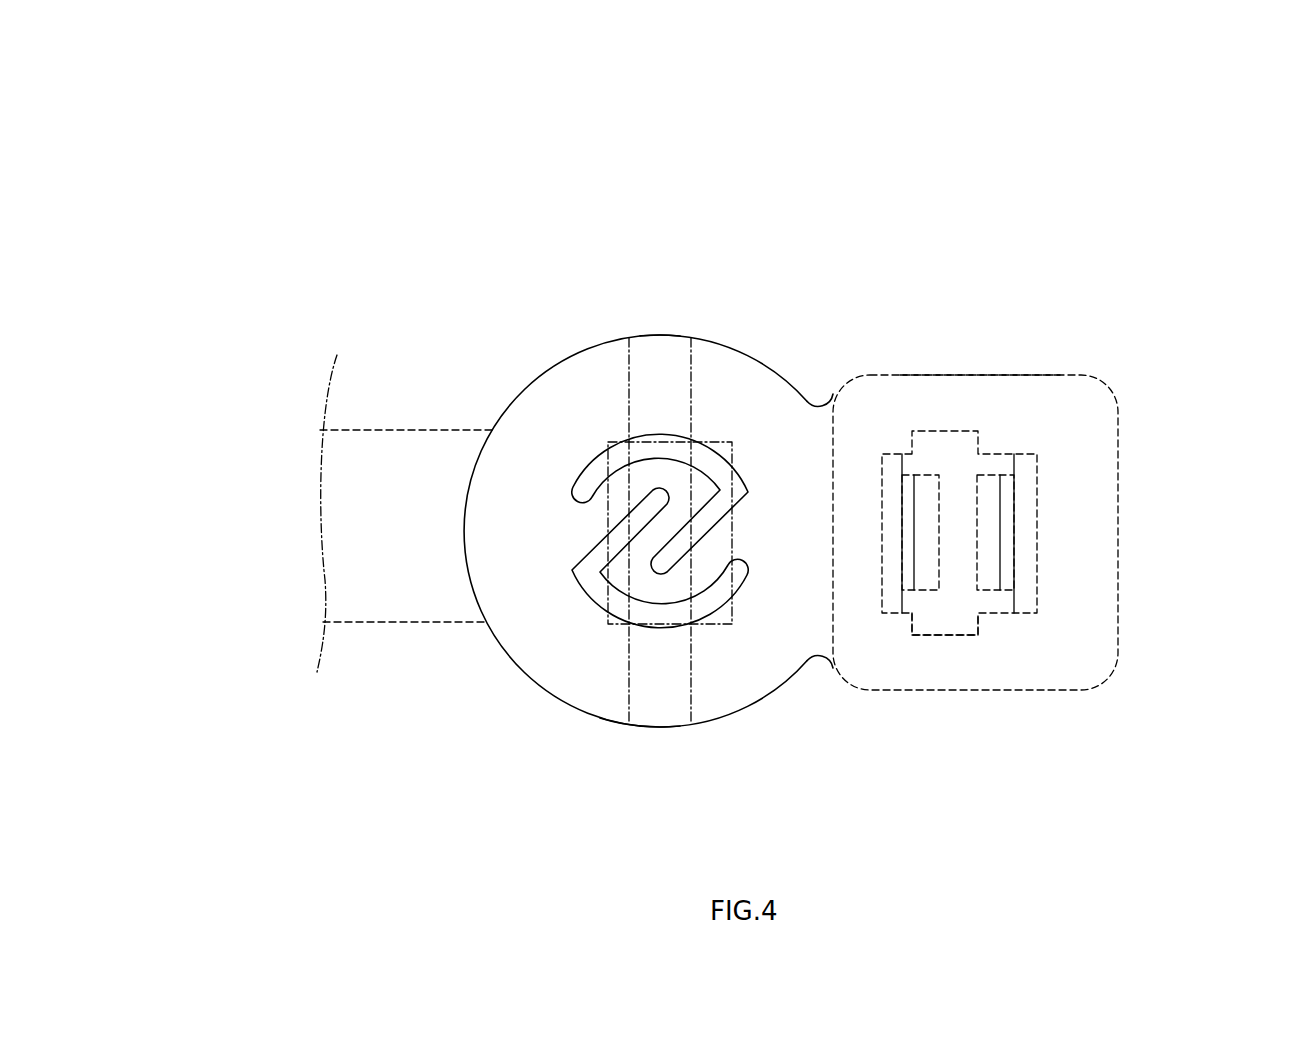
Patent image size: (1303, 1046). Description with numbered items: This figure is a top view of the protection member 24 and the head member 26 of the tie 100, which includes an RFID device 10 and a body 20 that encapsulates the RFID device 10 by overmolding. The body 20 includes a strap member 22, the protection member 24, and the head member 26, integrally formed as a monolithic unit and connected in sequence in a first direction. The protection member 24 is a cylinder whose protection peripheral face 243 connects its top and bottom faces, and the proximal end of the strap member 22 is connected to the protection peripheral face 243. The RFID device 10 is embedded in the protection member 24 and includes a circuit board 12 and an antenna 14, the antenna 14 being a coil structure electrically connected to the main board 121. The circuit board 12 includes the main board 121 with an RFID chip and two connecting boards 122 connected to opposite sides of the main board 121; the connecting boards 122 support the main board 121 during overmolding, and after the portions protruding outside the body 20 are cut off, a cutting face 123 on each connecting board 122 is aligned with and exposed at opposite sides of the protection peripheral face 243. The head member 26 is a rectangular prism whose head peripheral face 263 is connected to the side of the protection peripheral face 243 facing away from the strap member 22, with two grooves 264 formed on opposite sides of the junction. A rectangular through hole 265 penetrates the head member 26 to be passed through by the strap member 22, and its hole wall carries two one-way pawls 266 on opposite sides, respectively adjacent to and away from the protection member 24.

The tie 100 is at (678, 197).
The RFID device 10 is at (548, 603).
The circuit board 12 is at (482, 220).
The main board 121 is at (607, 452).
The connecting boards 122 is at (627, 345).
The cutting face 123 is at (662, 337).
The antenna 14 is at (630, 495).
The body 20 is at (822, 285).
The strap member 22 is at (340, 430).
The protection member 24 is at (480, 432).
The protection peripheral face 243 is at (622, 728).
The head member 26 is at (1118, 602).
The head peripheral face 263 is at (1023, 375).
The grooves 264 is at (820, 406).
The through hole 265 is at (932, 633).
The one-way pawl 266 is at (988, 503).